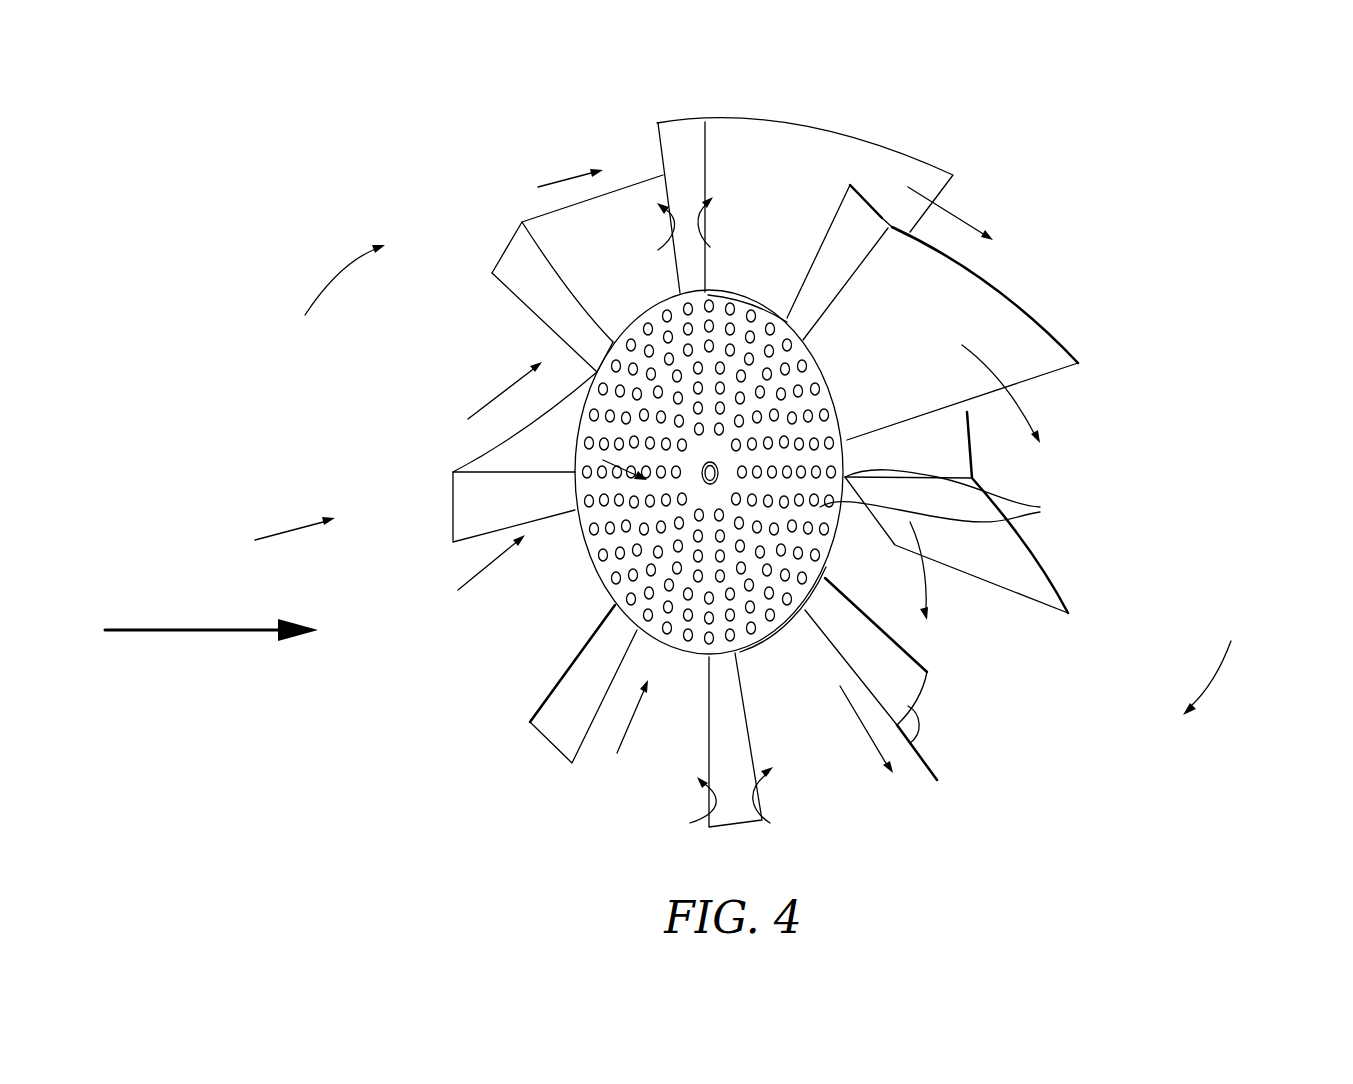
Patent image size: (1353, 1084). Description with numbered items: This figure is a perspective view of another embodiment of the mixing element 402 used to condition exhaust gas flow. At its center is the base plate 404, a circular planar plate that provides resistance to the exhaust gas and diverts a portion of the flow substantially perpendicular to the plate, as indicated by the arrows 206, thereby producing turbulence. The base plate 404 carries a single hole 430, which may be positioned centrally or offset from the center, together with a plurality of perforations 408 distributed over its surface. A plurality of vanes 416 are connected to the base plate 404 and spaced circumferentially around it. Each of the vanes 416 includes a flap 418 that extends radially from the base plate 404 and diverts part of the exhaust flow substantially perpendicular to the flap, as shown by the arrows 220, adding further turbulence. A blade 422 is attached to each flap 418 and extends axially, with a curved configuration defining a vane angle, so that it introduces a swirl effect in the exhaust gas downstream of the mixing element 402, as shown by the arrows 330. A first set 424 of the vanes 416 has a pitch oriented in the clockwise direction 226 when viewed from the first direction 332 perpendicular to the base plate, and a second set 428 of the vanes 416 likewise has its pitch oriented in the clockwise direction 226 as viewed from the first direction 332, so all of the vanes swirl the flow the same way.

The arrows 206 is at (820, 533).
The arrows 220 is at (648, 200).
The clockwise direction 226 is at (318, 292).
The arrows 330 is at (560, 178).
The first direction 332 is at (212, 628).
The mixing element 402 is at (1148, 306).
The base plate 404 is at (637, 343).
The perforations 408 is at (953, 512).
The vanes 416 is at (1100, 352).
The flap 418 is at (677, 135).
The blade 422 is at (808, 155).
The first set 424 is at (1195, 470).
The second set 428 is at (295, 520).
The single hole 430 is at (707, 467).